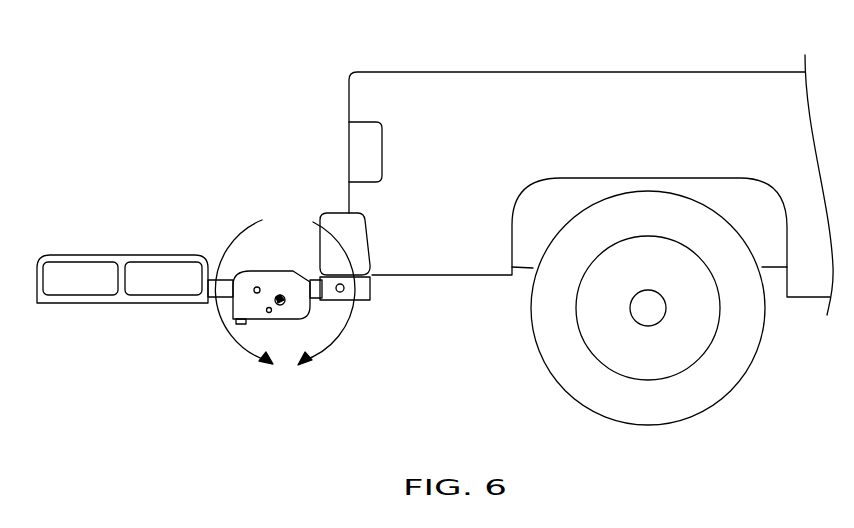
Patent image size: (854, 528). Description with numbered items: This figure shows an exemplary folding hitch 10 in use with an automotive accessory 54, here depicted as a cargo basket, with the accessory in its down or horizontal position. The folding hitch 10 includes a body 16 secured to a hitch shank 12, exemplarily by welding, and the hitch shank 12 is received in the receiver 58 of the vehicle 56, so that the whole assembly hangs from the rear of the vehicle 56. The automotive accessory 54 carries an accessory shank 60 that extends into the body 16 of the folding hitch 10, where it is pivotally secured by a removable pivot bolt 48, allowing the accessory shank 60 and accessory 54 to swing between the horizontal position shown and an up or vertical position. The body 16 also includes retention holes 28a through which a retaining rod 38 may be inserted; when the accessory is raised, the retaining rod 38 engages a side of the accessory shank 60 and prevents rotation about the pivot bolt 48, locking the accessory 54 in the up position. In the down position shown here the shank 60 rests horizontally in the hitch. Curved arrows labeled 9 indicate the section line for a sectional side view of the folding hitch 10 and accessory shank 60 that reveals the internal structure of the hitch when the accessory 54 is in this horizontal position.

The section view direction 9 is at (285, 307).
The folding hitch 10 is at (278, 284).
The hitch shank 12 is at (313, 301).
The body 16 is at (263, 274).
The retention holes 28a is at (268, 313).
The retaining rod 38 is at (287, 304).
The pivot bolt 48 is at (255, 292).
The automotive accessory 54 is at (137, 243).
The vehicle 56 is at (515, 88).
The receiver 58 is at (345, 300).
The accessory shank 60 is at (226, 284).